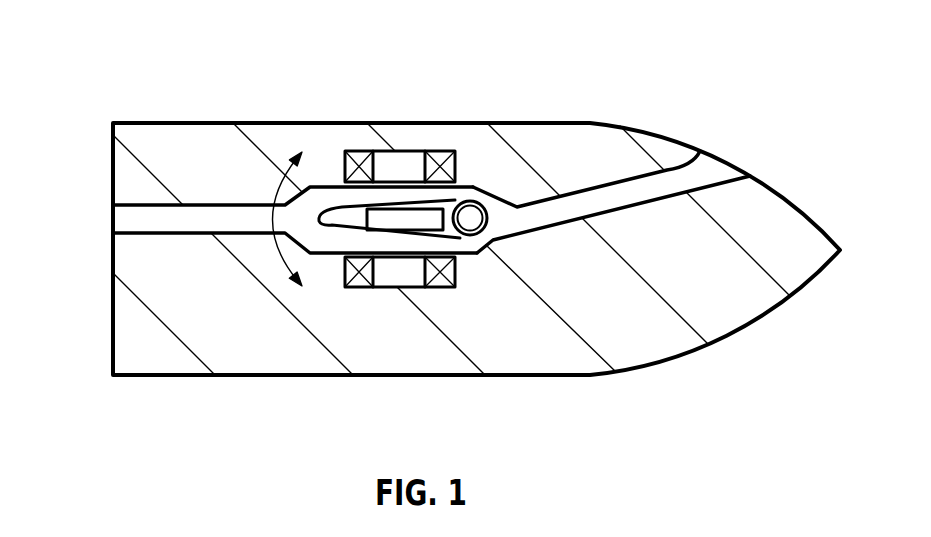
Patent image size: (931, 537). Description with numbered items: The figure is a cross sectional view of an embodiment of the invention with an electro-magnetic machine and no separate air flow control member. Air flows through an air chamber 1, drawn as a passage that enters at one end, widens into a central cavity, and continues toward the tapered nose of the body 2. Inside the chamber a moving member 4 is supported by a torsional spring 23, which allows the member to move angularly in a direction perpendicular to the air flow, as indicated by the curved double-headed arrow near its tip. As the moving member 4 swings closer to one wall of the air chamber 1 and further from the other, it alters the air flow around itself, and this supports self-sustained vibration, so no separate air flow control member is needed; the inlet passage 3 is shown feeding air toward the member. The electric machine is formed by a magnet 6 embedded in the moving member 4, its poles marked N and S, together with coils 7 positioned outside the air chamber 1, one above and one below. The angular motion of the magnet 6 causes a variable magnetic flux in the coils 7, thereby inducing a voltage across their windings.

The air chamber 1 is at (500, 213).
The nozzle housing 2 is at (720, 163).
The inlet channel 3 is at (125, 220).
The moving member 4 is at (347, 218).
The magnet 6 is at (413, 223).
The coils 7 is at (360, 151).
The torsional spring 23 is at (475, 200).
The north pole N is at (363, 228).
The south pole S is at (433, 230).